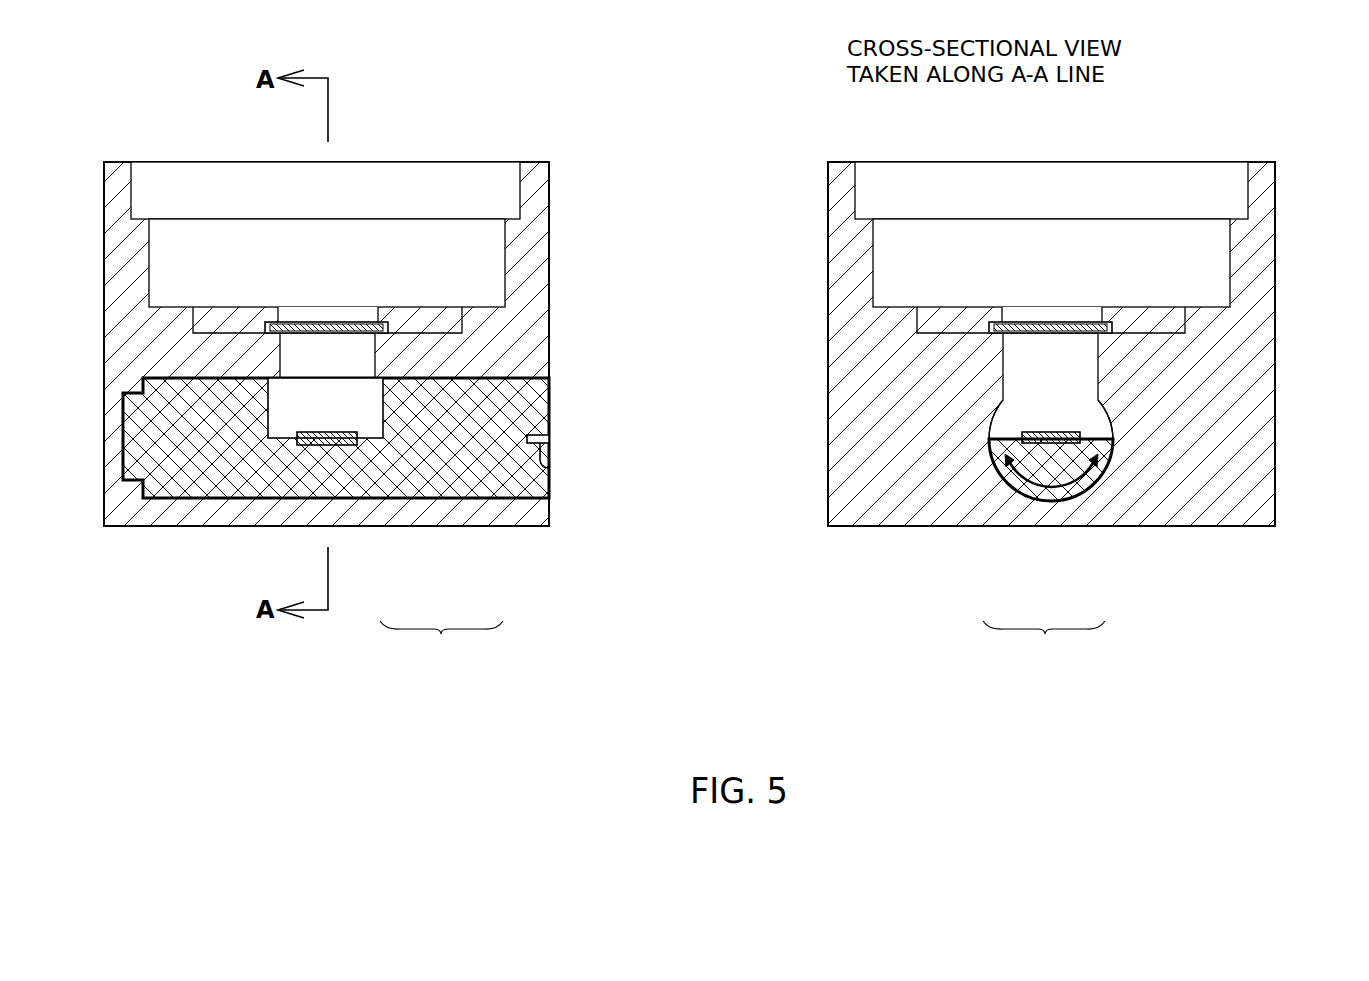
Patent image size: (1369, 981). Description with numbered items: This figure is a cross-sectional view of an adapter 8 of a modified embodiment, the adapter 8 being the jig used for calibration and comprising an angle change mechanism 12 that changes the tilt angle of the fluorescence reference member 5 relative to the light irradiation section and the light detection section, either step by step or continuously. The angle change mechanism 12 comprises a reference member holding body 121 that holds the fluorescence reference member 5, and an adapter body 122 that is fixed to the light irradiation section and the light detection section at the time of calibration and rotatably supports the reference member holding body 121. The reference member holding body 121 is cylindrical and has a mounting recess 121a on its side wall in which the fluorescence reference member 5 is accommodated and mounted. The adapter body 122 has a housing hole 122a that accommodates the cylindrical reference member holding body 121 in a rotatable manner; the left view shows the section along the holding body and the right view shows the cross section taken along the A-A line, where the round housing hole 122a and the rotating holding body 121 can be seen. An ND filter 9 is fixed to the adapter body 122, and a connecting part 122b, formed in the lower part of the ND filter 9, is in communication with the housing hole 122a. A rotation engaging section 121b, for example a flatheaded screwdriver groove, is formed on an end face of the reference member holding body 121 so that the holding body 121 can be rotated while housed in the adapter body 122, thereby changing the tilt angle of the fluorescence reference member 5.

The fluorescence reference member 5 is at (318, 432).
The adapter 8 is at (104, 307).
The ND filter 9 is at (333, 322).
The angle change mechanism 12 is at (618, 519).
The reference member holding body 121 is at (618, 501).
The mounting recess 121a is at (358, 396).
The rotation engaging section 121b is at (549, 468).
The adapter body 122 is at (820, 472).
The housing hole 122a is at (1068, 400).
The connecting part 122b is at (358, 342).